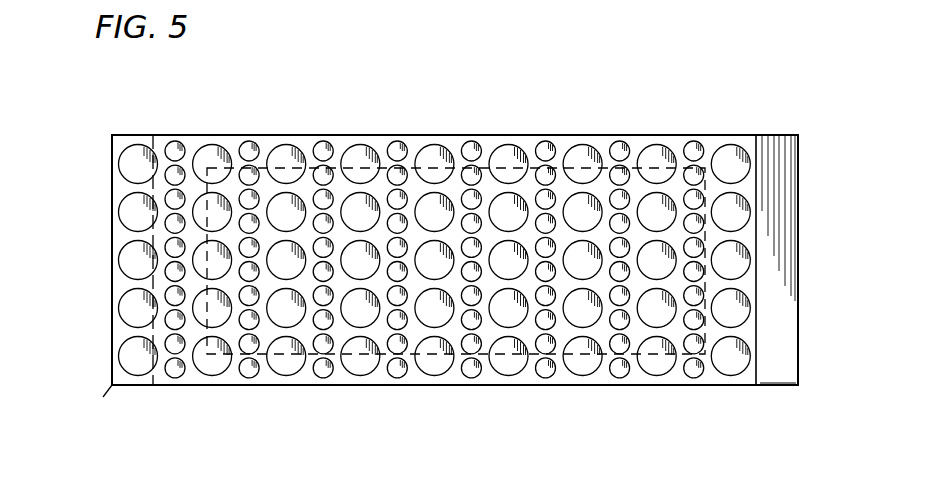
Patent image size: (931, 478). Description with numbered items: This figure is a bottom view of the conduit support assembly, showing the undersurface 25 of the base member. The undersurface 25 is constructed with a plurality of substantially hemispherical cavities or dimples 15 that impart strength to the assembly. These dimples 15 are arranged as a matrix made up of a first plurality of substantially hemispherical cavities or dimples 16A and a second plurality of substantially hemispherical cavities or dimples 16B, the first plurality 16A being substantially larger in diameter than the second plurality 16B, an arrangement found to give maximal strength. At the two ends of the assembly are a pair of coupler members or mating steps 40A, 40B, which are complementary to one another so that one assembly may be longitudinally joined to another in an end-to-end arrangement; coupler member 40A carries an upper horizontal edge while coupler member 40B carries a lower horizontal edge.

The plurality of substantially hemispherical cavities or dimples 15 is at (565, 382).
The first plurality of substantially hemispherical cavities or dimples 16A is at (437, 162).
The second plurality of substantially hemispherical cavities or dimples 16B is at (318, 150).
The undersurface 25 is at (800, 238).
The coupler member 40A is at (783, 367).
The coupler member 40B is at (112, 387).